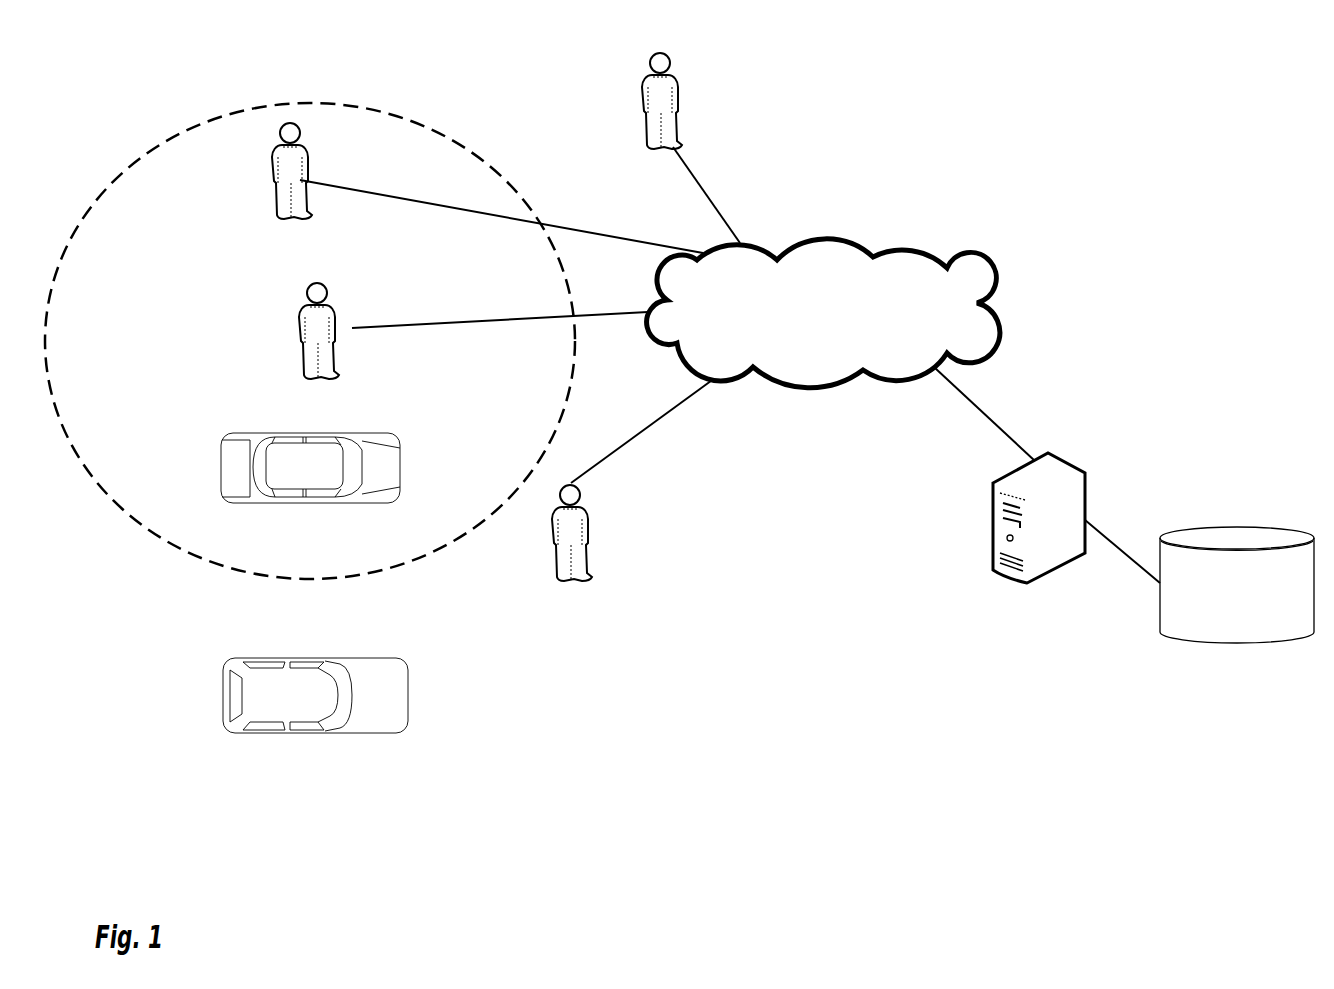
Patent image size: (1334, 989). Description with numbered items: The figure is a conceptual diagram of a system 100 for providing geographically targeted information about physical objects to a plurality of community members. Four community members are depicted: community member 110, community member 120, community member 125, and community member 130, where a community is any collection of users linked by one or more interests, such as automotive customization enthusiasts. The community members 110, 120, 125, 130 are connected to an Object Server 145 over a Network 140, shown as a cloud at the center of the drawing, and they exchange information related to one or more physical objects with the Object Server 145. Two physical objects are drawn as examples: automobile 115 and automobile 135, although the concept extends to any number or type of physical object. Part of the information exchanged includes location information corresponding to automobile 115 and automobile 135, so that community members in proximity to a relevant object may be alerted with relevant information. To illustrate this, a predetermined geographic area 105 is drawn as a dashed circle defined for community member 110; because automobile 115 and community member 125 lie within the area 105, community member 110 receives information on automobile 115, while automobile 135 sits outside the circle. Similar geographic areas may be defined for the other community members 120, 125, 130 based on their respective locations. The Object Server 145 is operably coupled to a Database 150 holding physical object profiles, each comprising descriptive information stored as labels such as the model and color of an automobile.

The system 100 is at (1280, 812).
The predetermined geographic area 105 is at (357, 107).
The community member 110 is at (332, 320).
The automobile 115 is at (400, 437).
The community member 120 is at (677, 80).
The community member 125 is at (273, 195).
The community member 130 is at (587, 535).
The automobile 135 is at (290, 657).
The Network 140 is at (885, 250).
The Object Server 145 is at (1080, 503).
The Database 150 is at (1190, 637).